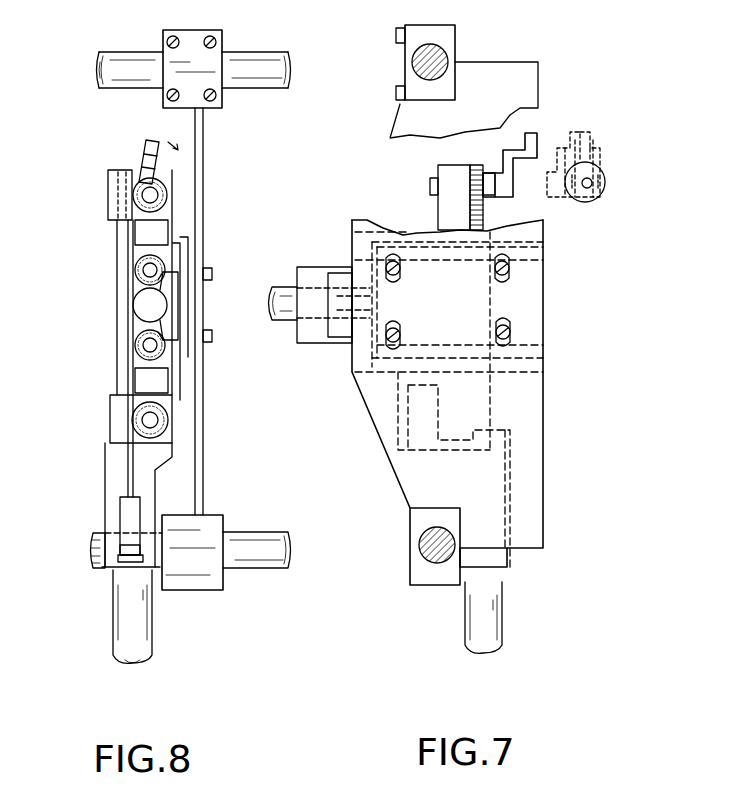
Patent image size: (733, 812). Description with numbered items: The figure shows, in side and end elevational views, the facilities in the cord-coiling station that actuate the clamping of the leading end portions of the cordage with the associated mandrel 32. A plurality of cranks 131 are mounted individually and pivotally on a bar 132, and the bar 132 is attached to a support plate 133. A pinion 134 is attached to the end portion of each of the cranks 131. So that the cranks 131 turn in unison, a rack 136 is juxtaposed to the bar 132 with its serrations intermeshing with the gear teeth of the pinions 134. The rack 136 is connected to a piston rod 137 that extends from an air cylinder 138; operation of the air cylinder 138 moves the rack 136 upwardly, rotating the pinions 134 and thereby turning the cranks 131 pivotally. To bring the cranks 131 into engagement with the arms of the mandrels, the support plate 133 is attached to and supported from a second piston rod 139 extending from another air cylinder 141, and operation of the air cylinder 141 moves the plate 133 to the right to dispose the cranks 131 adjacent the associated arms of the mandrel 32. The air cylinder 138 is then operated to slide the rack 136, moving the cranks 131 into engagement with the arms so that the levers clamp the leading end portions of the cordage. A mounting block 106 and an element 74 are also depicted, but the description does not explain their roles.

In FIG. 7, the mandrel 32 is at (600, 200).
In FIG. 7, the shaft 74 is at (611, 181).
In FIG. 7, the mounting block 106 is at (440, 60).
In FIG. 8, the mounting block 106 is at (130, 52).
In FIG. 7, the crank 131 is at (526, 134).
In FIG. 8, the crank 131 is at (140, 150).
In FIG. 7, the bar 132 is at (438, 207).
In FIG. 8, the bar 132 is at (116, 290).
In FIG. 7, the plate 133 is at (533, 300).
In FIG. 7, the pinion 134 is at (490, 173).
In FIG. 8, the pinion 134 is at (134, 203).
In FIG. 7, the rack 136 is at (489, 206).
In FIG. 8, the rack 136 is at (130, 347).
In FIG. 8, the piston rod 137 is at (108, 562).
In FIG. 7, the air cylinder 138 is at (495, 632).
In FIG. 8, the air cylinder 138 is at (142, 630).
In FIG. 7, the piston rod 139 is at (337, 296).
In FIG. 7, the air cylinder 141 is at (275, 325).